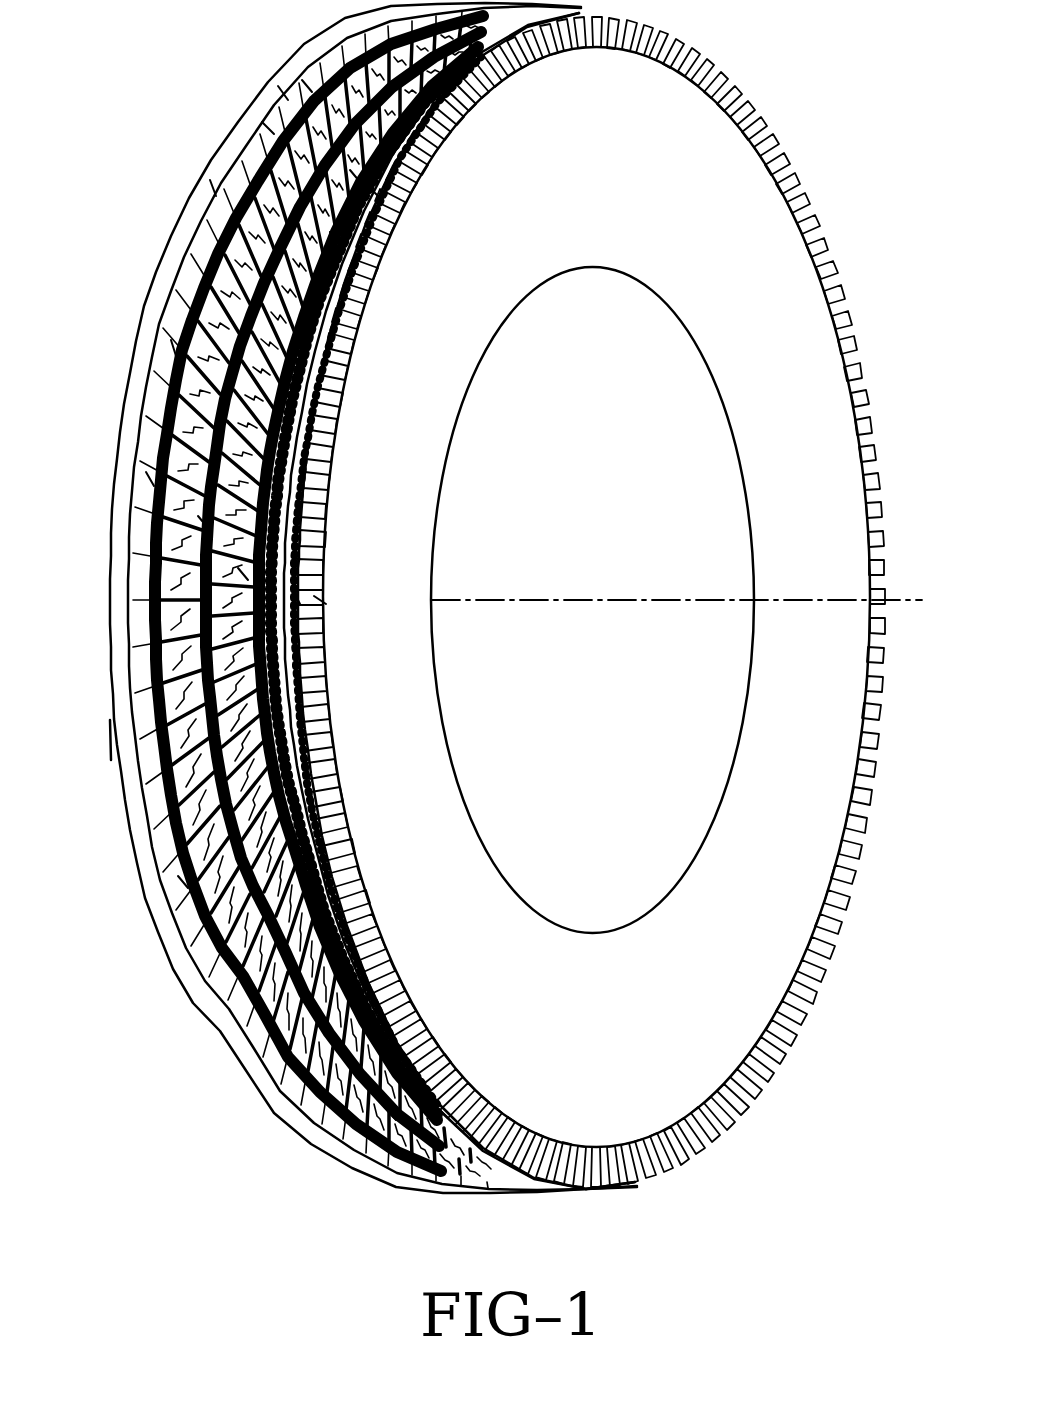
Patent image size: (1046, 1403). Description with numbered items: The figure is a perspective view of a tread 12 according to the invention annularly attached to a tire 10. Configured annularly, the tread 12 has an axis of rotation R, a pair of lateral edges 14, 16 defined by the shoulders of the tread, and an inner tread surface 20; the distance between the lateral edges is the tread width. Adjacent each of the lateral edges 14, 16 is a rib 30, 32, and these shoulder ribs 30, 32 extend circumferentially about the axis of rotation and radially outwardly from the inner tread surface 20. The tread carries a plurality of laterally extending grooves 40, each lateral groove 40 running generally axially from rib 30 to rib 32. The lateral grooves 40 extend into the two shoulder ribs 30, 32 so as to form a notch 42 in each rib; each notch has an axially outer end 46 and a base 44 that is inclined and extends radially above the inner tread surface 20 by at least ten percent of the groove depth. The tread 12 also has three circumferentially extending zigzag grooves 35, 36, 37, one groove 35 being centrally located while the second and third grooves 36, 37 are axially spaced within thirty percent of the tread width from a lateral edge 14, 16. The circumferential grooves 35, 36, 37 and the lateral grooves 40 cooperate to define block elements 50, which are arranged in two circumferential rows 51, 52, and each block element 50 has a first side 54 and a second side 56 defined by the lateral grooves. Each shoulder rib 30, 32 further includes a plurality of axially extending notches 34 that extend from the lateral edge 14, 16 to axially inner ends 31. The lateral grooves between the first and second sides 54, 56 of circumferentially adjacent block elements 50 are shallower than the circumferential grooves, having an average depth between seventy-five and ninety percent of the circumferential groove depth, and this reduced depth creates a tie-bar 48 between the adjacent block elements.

The tire 10 is at (722, 1152).
The tread 12 is at (200, 1012).
The lateral edge 14 is at (108, 735).
The lateral edge 16 is at (313, 498).
The inner tread surface 20 is at (172, 345).
The rib 30 is at (213, 187).
The axially inner end 31 is at (297, 597).
The rib 32 is at (332, 238).
The axially extending notch 34 is at (320, 600).
The circumferentially extending zigzag groove 35 is at (203, 522).
The circumferentially extending zigzag groove 36 is at (243, 573).
The circumferentially extending zigzag groove 37 is at (150, 478).
The lateral extending groove 40 is at (268, 127).
The notch 42 is at (282, 92).
The base 44 is at (355, 176).
The axially outer end 46 is at (372, 190).
The tie-bar 48 is at (306, 85).
The block element 50 is at (200, 907).
The circumferential row 51 is at (390, 1113).
The circumferential row 52 is at (303, 1077).
The first side 54 is at (183, 882).
The second side 56 is at (215, 932).